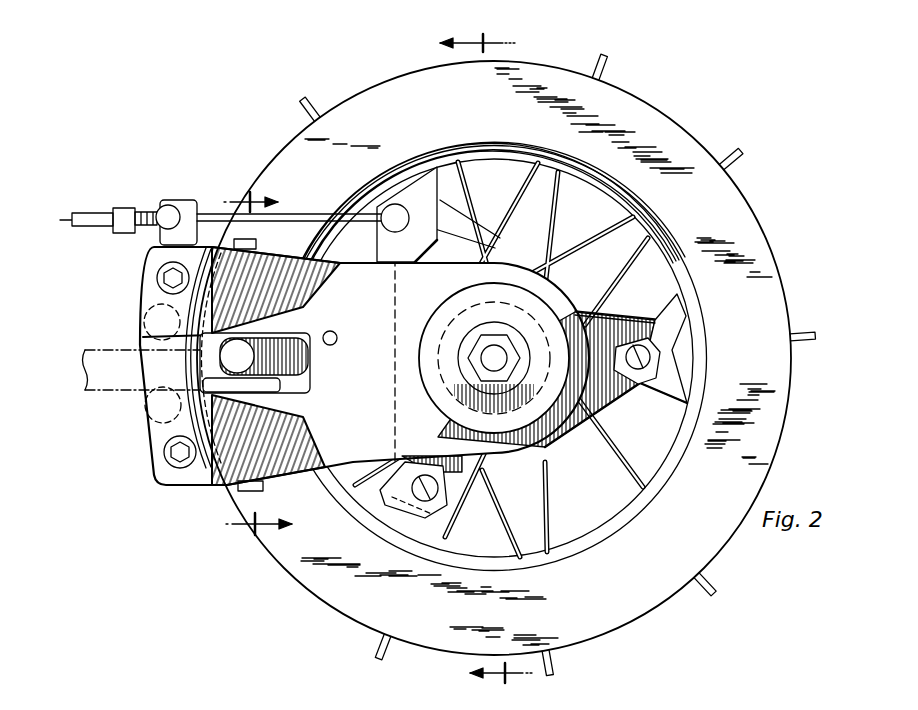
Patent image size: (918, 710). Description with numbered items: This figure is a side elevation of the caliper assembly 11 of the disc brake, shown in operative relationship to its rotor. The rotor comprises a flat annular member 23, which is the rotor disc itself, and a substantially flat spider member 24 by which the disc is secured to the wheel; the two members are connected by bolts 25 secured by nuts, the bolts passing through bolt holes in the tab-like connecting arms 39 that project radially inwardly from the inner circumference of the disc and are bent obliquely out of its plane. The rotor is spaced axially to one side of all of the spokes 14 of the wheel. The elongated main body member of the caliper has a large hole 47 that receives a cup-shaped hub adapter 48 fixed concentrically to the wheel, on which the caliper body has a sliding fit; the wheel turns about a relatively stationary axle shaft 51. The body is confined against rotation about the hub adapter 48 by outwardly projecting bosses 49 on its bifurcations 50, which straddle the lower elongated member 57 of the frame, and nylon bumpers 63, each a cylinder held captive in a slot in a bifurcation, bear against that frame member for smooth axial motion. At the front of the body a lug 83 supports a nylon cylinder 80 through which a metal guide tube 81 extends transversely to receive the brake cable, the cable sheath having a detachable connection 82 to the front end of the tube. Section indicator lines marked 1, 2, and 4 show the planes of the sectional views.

The section line 1- 1 is at (251, 189).
The section line 2- 2 is at (259, 537).
The section line 4- 4 is at (493, 362).
The caliper assembly 11 is at (258, 452).
The spokes 14 is at (496, 240).
The flat annular member 23 is at (752, 240).
The spider member 24 is at (595, 286).
The bolts 25 is at (445, 222).
The tab-like connecting arms 39 is at (653, 395).
The large hole 47 is at (470, 292).
The cup-shaped hub adapter 48 is at (462, 425).
The bosses 49 is at (165, 306).
The bifurcations 50 is at (158, 278).
The axle shaft 51 is at (470, 354).
The lower elongated member 57 is at (125, 348).
The pads or bumpers 63 is at (205, 360).
The cylinder 80 is at (170, 205).
The metal tube 81 is at (160, 212).
The detachable connection 82 is at (118, 233).
The lug 83 is at (192, 200).